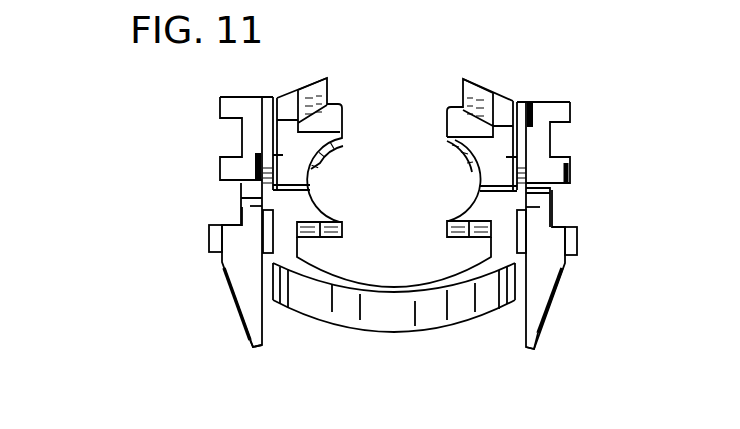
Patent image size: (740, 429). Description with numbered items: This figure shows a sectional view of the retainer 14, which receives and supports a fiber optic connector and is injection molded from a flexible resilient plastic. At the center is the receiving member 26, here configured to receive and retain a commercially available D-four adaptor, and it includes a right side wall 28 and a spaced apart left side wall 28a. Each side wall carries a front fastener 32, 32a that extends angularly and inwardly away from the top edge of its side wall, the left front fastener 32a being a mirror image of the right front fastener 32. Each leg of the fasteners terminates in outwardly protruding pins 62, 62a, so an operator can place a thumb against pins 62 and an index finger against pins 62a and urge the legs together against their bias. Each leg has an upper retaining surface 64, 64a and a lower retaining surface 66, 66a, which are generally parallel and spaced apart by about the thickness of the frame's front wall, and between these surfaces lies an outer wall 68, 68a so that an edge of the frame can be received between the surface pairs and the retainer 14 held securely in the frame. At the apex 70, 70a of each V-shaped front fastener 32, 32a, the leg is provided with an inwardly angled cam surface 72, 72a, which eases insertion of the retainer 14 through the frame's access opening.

The retainer 14 is at (130, 131).
The receiving member 26 is at (336, 218).
The right side wall 28 is at (506, 247).
The left side wall 28a is at (287, 245).
The front fastener 32 is at (573, 291).
The front fastener 32a is at (218, 284).
The pins 62 is at (569, 172).
The pins 62a is at (217, 158).
The upper retaining surface 64 is at (561, 191).
The upper retaining surface 64a is at (236, 184).
The lower retaining surface 66 is at (553, 226).
The lower retaining surface 66a is at (237, 225).
The outer wall 68 is at (551, 203).
The outer wall 68a is at (237, 203).
The apex 70 is at (529, 352).
The apex 70a is at (255, 348).
The cam surface 72 is at (547, 317).
The cam surface 72a is at (238, 320).